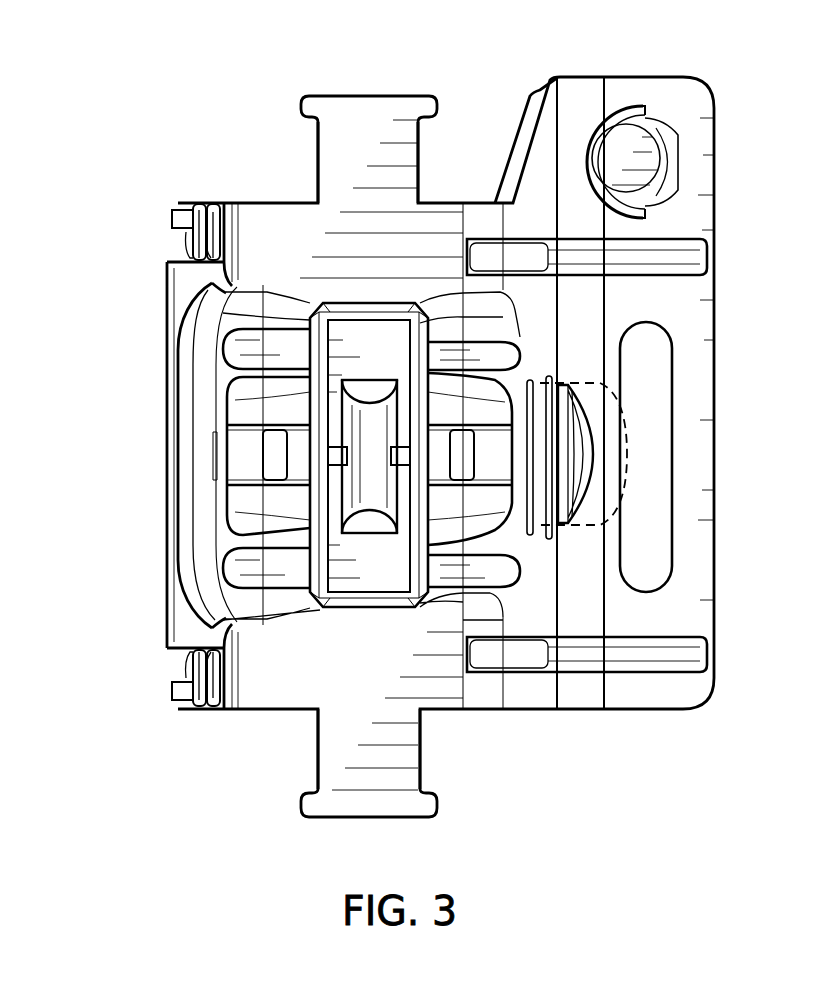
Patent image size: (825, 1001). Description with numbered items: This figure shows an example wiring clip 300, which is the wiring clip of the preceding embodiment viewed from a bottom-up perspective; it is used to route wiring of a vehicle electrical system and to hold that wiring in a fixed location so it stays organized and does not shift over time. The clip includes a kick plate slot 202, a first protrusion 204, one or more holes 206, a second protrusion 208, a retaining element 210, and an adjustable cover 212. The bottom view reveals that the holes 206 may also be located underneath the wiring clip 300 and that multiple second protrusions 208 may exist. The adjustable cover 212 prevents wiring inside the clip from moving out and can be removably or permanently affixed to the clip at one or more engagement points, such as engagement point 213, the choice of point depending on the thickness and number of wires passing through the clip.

The wiring clip 300 is at (186, 38).
The kick plate slot 202 is at (658, 364).
The first protrusion 204 is at (653, 142).
The holes 206 is at (263, 455).
The second protrusion 208 is at (305, 154).
The retaining element 210 is at (290, 498).
The adjustable cover 212 is at (595, 455).
The engagement point 213 is at (172, 218).